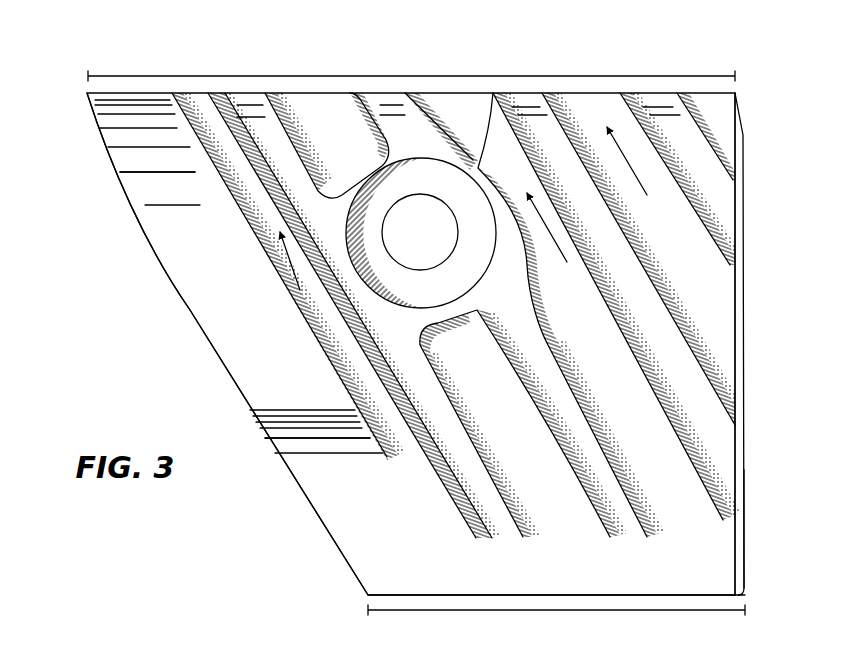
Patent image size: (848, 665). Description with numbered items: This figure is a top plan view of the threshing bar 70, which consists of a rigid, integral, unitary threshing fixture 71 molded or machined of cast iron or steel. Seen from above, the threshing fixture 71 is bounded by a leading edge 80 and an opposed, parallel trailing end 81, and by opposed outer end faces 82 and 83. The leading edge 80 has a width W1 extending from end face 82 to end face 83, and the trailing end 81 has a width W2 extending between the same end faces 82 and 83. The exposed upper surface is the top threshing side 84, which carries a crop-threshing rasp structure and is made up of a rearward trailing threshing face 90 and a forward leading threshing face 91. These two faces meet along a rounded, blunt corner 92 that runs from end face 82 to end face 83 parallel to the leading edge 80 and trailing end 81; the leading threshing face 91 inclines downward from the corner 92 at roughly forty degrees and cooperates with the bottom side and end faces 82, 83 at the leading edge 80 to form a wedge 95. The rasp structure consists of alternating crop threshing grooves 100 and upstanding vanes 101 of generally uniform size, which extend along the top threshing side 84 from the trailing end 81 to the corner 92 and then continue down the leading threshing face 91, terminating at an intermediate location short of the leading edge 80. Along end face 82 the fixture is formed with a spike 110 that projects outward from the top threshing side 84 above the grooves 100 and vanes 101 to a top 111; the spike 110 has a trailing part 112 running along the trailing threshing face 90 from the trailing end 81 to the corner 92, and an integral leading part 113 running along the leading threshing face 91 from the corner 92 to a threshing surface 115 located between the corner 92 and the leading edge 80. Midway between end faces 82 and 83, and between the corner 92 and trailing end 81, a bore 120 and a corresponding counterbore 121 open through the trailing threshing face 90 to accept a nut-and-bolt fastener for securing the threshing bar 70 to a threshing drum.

The threshing bar 70 is at (240, 553).
The threshing fixture 71 is at (743, 117).
The leading edge 80 is at (682, 597).
The trailing end 81 is at (420, 105).
The end face 82 is at (165, 275).
The end face 83 is at (745, 282).
The top threshing side 84 is at (590, 321).
The trailing threshing face 90 is at (483, 160).
The leading threshing face 91 is at (575, 563).
The corner 92 is at (690, 450).
The wedge 95 is at (745, 488).
The crop threshing grooves 100 is at (205, 108).
The vanes 101 is at (720, 212).
The spike 110 is at (150, 240).
The top 111 is at (215, 305).
The trailing part 112 is at (87, 128).
The leading part 113 is at (228, 378).
The threshing surface 115 is at (285, 436).
The bore 120 is at (420, 232).
The counterbore 121 is at (421, 233).
The width of leading edge W1 is at (556, 635).
The width of trailing end W2 is at (622, 76).